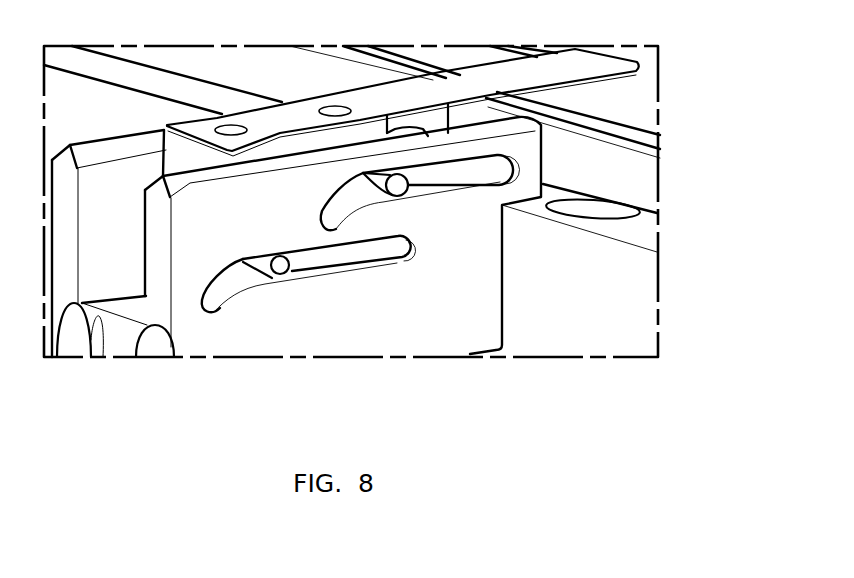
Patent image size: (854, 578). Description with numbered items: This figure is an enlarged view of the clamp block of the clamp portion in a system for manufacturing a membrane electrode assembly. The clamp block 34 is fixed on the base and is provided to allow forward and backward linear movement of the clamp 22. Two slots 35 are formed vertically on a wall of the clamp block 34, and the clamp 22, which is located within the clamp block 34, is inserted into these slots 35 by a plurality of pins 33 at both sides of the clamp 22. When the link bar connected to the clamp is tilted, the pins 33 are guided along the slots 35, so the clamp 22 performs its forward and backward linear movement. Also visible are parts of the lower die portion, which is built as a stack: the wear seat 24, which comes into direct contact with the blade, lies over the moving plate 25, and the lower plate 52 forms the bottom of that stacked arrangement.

The clamp 22 is at (577, 63).
The wear seat 24 is at (618, 108).
The moving plate 25 is at (623, 168).
The pins 33 is at (280, 268).
The clamp block 34 is at (487, 310).
The slots 35 is at (313, 273).
The lower plate 52 is at (625, 308).